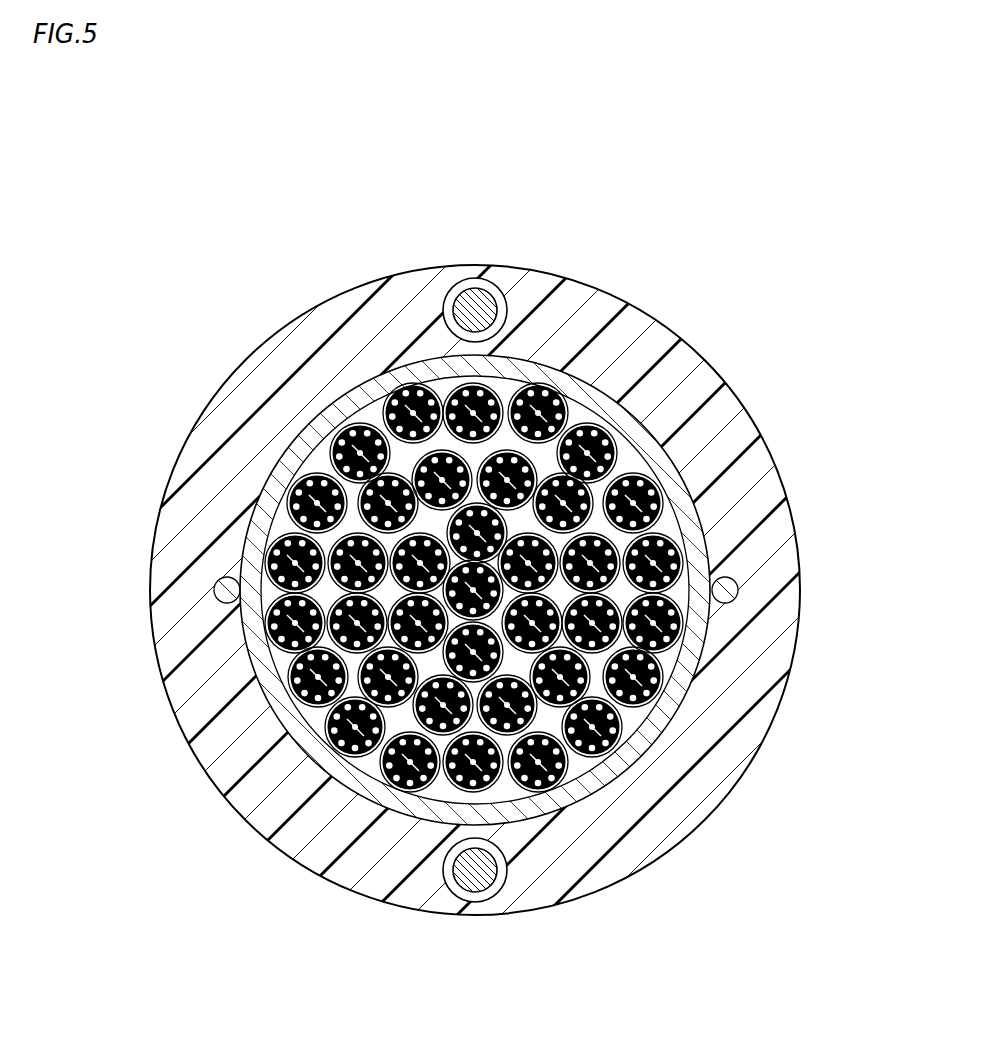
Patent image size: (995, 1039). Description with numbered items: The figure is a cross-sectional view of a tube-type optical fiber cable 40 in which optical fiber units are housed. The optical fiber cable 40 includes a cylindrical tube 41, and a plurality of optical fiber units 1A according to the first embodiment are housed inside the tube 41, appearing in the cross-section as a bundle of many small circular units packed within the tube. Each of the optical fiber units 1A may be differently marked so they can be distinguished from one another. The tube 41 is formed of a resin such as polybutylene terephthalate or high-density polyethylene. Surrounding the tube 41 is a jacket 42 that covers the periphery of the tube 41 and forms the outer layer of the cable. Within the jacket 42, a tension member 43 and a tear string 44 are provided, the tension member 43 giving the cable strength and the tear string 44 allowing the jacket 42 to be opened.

The optical fiber cable 40 is at (671, 167).
The tube 41 is at (608, 410).
The jacket 42 is at (717, 403).
The tension member 43 is at (493, 297).
The tear string 44 is at (738, 590).
The optical fiber unit 1A is at (373, 385).